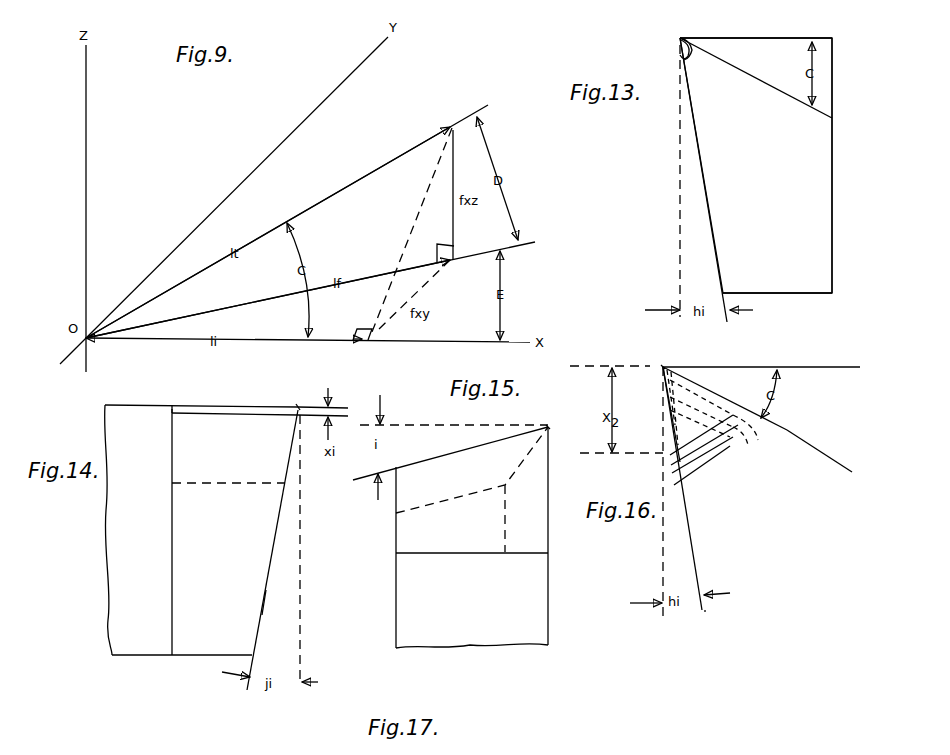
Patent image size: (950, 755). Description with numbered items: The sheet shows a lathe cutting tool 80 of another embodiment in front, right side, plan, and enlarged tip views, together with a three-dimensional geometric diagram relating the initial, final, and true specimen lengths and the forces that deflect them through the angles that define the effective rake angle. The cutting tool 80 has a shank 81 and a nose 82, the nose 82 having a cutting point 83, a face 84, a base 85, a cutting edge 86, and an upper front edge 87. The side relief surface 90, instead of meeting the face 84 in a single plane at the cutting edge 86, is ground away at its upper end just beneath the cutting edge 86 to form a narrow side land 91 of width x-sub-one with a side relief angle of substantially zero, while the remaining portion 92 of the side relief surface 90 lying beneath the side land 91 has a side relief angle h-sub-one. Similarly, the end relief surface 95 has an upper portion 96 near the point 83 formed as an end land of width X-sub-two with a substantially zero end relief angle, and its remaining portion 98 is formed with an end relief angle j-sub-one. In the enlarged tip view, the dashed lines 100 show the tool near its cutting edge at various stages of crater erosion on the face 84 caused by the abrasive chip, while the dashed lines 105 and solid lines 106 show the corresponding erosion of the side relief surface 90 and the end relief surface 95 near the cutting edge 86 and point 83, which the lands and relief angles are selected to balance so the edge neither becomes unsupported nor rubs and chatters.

In FIG. 13, the cutting tool 80 is at (802, 36).
In FIG. 14, the cutting tool 80 is at (96, 591).
In FIG. 15, the cutting tool 80 is at (389, 603).
In FIG. 16, the cutting tool 80 is at (752, 576).
In FIG. 14, the shank 81 is at (132, 648).
In FIG. 15, the shank 81 is at (540, 607).
In FIG. 13, the nose 82 is at (710, 36).
In FIG. 14, the nose 82 is at (176, 661).
In FIG. 15, the nose 82 is at (394, 547).
In FIG. 16, the nose 82 is at (751, 362).
In FIG. 13, the cutting point 83 is at (674, 42).
In FIG. 14, the cutting point 83 is at (298, 403).
In FIG. 15, the cutting point 83 is at (548, 427).
In FIG. 16, the cutting point 83 is at (663, 366).
In FIG. 15, the face 84 is at (405, 495).
In FIG. 13, the base 85 is at (798, 296).
In FIG. 14, the base 85 is at (210, 660).
In FIG. 14, the cutting edge 86 is at (220, 403).
In FIG. 15, the cutting edge 86 is at (548, 475).
In FIG. 13, the upper front edge 87 is at (748, 72).
In FIG. 15, the upper front edge 87 is at (473, 445).
In FIG. 16, the upper front edge 87 is at (773, 427).
In FIG. 13, the side relief surface 90 is at (702, 168).
In FIG. 14, the side relief surface 90 is at (257, 542).
In FIG. 16, the side relief surface 90 is at (682, 552).
In FIG. 14, the side land 91 is at (208, 408).
In FIG. 13, the remaining portion of the side relief surface 92 is at (712, 240).
In FIG. 14, the remaining portion of the side relief surface 92 is at (247, 570).
In FIG. 16, the remaining portion of the side relief surface 92 is at (695, 578).
In FIG. 13, the end relief surface 95 is at (766, 173).
In FIG. 14, the end relief surface 95 is at (283, 521).
In FIG. 16, the end relief surface 95 is at (795, 507).
In FIG. 13, the upper portion of the end relief surface 96 is at (682, 63).
In FIG. 16, the upper portion of the end relief surface 96 is at (680, 410).
In FIG. 13, the remaining portion of the end relief surface 98 is at (796, 217).
In FIG. 14, the remaining portion of the end relief surface 98 is at (262, 614).
In FIG. 16, the remaining portion of the end relief surface 98 is at (818, 465).
In FIG. 16, the dashed lines showing face erosion 100 is at (703, 408).
In FIG. 16, the dashed lines showing side relief surface erosion 105 is at (666, 427).
In FIG. 16, the solid lines showing end relief surface erosion 106 is at (703, 453).